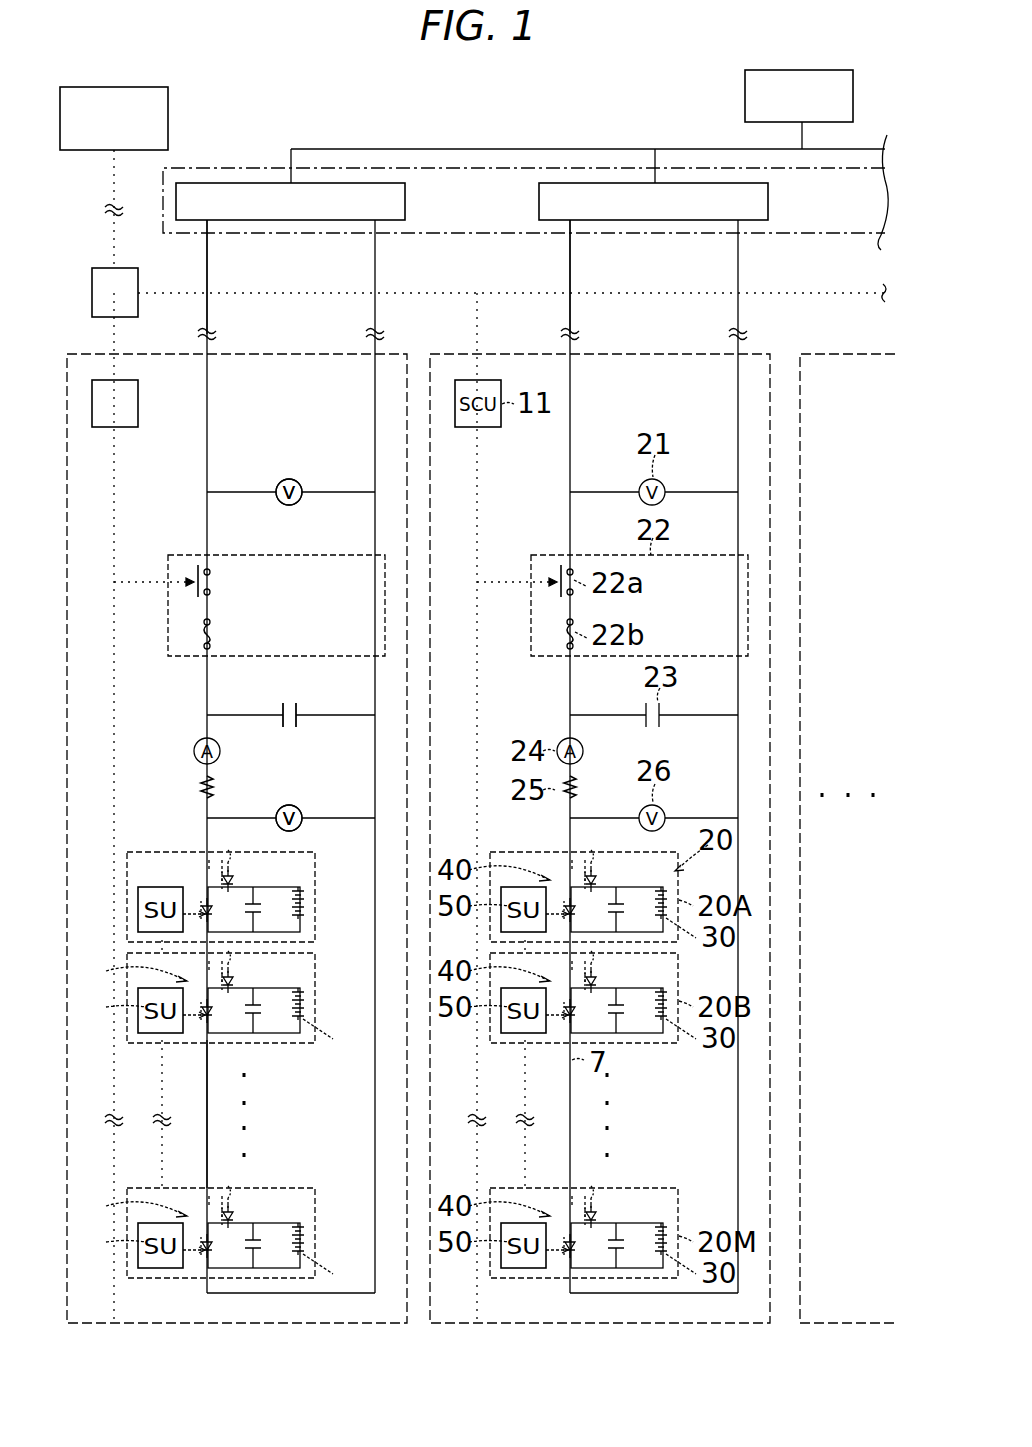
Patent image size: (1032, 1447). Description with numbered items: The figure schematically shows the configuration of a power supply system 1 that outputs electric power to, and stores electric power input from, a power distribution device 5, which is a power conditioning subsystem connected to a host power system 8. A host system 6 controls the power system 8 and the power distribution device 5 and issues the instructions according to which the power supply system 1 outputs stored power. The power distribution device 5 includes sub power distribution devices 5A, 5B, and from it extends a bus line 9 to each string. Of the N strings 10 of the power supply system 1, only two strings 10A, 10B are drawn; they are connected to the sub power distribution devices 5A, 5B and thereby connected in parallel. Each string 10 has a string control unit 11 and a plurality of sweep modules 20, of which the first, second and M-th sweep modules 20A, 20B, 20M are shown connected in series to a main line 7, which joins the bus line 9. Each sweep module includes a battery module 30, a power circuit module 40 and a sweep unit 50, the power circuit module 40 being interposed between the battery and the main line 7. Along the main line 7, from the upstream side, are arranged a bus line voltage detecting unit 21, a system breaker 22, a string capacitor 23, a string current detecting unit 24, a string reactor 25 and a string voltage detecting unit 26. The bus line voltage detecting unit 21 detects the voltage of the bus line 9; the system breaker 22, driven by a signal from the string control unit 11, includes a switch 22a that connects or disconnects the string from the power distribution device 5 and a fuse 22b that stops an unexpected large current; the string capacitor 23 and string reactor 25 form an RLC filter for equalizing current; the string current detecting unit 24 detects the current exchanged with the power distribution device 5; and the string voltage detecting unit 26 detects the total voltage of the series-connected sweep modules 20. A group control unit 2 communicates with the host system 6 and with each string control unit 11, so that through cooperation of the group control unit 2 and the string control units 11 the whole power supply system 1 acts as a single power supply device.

The power supply system 1 is at (90, 245).
The group control unit (GCU) 2 is at (139, 280).
The power distribution device 5 is at (525, 182).
The sub power distribution device 5A is at (406, 203).
The sub power distribution device 5B is at (769, 203).
The host system 6 is at (169, 118).
The main line 7 is at (209, 1060).
The host power system 8 is at (854, 97).
The bus line 9 is at (584, 262).
The string 10 is at (145, 1337).
The string 10A is at (235, 1323).
The string 10B is at (598, 1323).
The string control unit (SCU) 11 is at (139, 404).
The sweep module 20 is at (234, 1058).
The sweep module 20A is at (231, 902).
The sweep module 20B is at (316, 1001).
The sweep module 20M is at (316, 1236).
The bus line voltage detecting unit 21 is at (290, 477).
The system breaker 22 is at (249, 585).
The switch 22a is at (211, 580).
The fuse 22b is at (212, 632).
The string capacitor 23 is at (295, 702).
The string current detecting unit 24 is at (192, 751).
The string reactor 25 is at (192, 790).
The string voltage detecting unit 26 is at (290, 802).
The battery module 30 is at (303, 918).
The power circuit module 40 is at (186, 880).
The sweep unit (SU) 50 is at (146, 906).